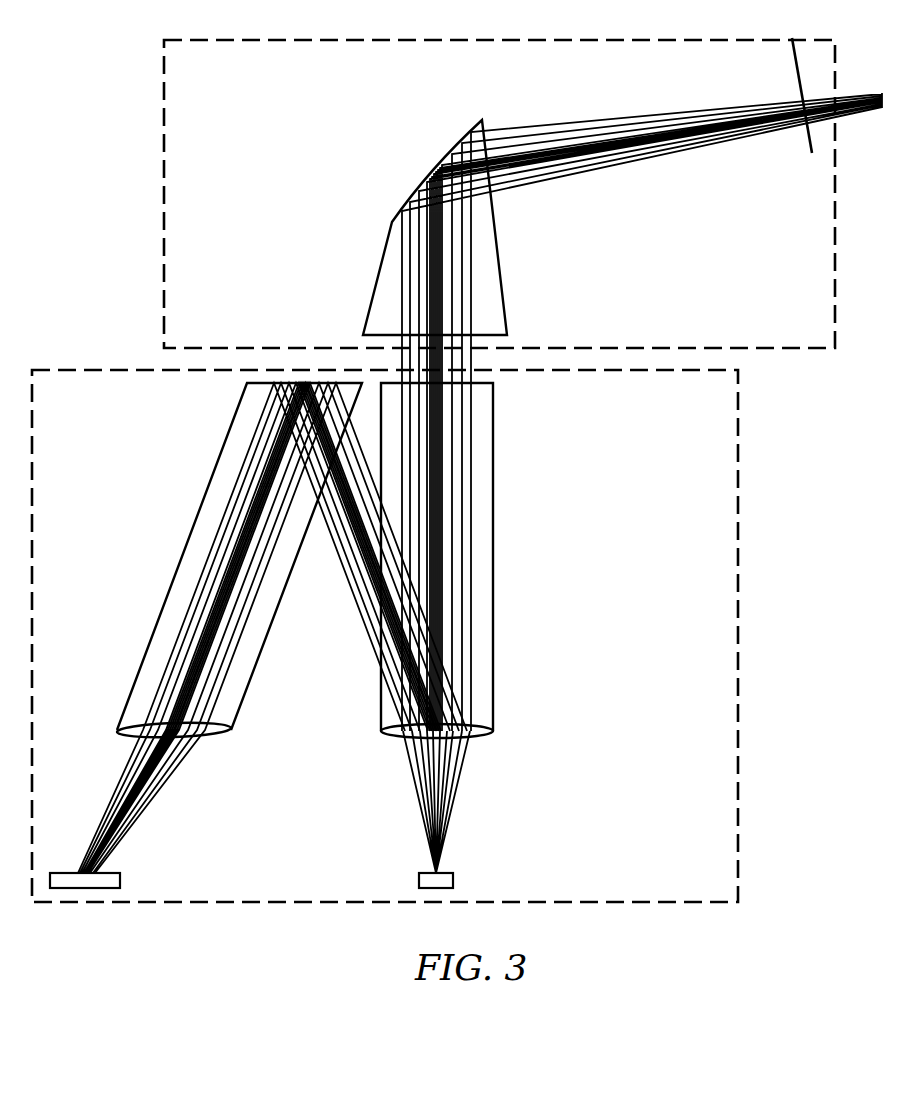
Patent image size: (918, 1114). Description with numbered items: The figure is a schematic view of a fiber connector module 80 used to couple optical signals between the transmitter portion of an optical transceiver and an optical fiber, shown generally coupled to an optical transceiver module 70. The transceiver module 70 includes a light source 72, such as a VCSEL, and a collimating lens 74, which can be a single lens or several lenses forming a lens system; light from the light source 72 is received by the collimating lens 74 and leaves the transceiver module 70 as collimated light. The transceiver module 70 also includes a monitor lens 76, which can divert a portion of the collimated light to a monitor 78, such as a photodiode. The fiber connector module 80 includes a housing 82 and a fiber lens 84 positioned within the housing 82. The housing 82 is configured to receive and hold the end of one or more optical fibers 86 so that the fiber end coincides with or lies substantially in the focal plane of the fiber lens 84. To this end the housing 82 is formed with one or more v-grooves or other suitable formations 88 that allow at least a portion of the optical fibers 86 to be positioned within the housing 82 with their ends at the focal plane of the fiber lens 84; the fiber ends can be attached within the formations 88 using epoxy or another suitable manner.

The optical transceiver module 70 is at (711, 560).
The light source 72 is at (447, 881).
The collimating lens 74 is at (477, 732).
The monitor lens 76 is at (215, 735).
The monitor 78 is at (112, 880).
The fiber connector module 80 is at (148, 173).
The housing 82 is at (588, 60).
The fiber lens 84 is at (445, 158).
The optical fiber 86 is at (847, 113).
The v-groove formation 88 is at (803, 75).